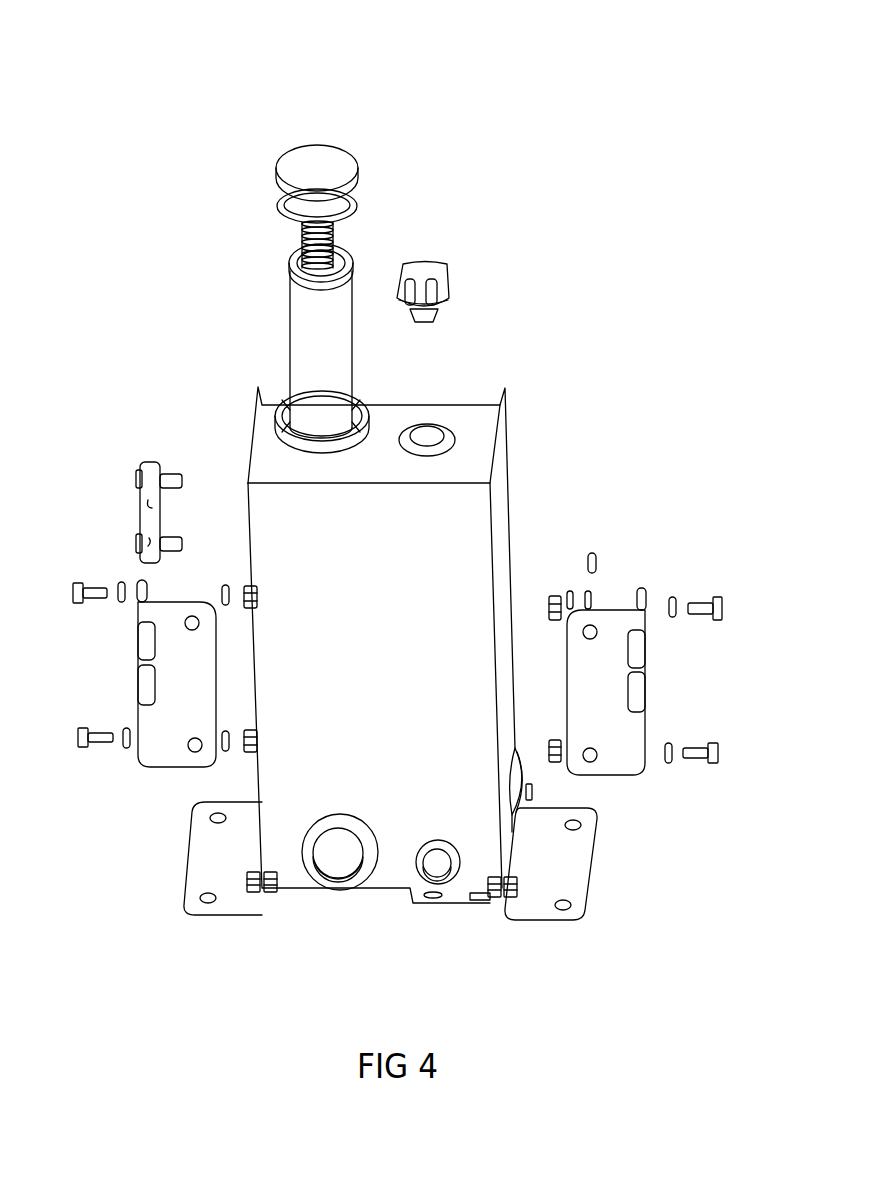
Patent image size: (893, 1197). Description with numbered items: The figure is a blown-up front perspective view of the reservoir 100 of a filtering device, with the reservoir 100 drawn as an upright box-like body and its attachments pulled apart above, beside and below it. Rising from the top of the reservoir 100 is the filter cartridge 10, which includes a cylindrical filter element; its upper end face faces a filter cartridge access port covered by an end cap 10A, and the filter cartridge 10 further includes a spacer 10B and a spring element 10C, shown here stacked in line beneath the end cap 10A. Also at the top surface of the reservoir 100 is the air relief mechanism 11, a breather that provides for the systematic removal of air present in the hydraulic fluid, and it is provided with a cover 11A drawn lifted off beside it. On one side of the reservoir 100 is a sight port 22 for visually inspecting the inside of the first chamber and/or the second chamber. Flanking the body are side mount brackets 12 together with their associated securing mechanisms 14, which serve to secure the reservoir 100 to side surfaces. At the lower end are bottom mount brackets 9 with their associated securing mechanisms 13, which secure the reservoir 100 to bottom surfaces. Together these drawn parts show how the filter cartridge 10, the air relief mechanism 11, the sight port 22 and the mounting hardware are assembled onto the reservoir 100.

The reservoir 100 is at (472, 54).
The filter cartridge 10 is at (240, 316).
The end cap 10A is at (325, 157).
The spacer 10B is at (355, 205).
The spring element 10C is at (335, 256).
The air relief mechanism 11 is at (425, 432).
The cover 11A is at (435, 272).
The sight port 22 is at (152, 470).
The side mount brackets 12 is at (158, 760).
The securing mechanisms 14 is at (78, 584).
The bottom mount brackets 9 is at (237, 903).
The securing mechanisms 13 is at (266, 892).